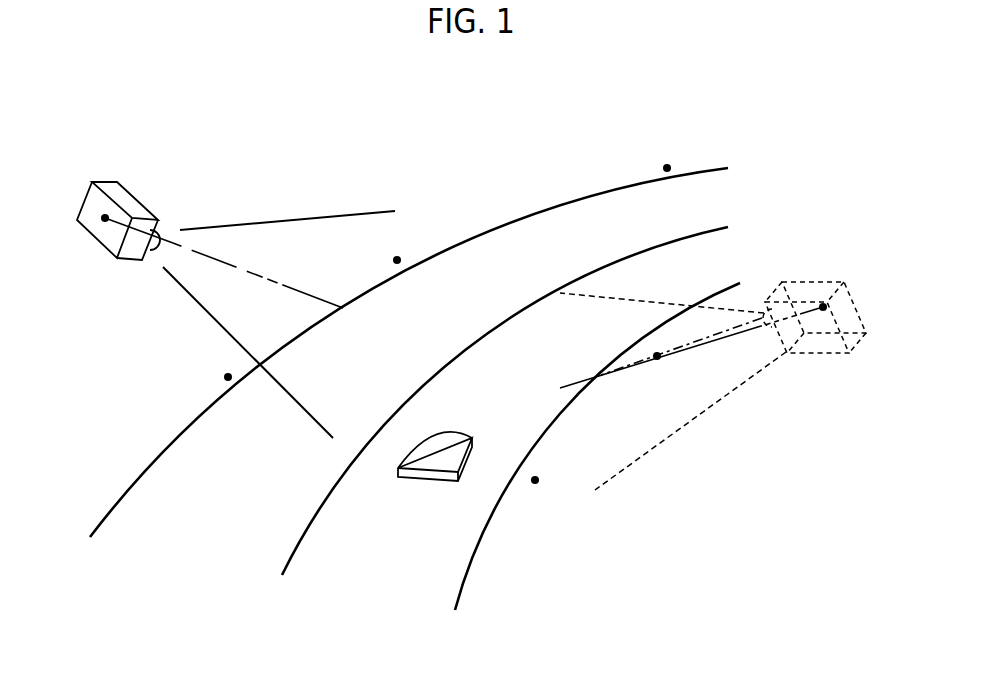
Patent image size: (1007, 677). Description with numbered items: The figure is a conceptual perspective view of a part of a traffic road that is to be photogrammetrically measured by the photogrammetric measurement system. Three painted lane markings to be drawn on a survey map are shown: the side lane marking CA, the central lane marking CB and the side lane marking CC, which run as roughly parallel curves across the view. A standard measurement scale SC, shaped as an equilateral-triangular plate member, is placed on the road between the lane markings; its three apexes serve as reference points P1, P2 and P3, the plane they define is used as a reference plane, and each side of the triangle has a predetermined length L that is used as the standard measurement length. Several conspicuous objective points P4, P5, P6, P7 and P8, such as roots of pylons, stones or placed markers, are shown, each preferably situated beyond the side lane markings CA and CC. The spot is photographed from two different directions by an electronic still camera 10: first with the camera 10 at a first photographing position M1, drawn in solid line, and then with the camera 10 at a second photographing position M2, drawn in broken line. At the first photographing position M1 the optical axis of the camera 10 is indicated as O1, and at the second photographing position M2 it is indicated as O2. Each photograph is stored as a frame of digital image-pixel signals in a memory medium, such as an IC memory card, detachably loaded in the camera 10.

The electronic still camera 10 is at (108, 237).
The first photographing position M1 is at (100, 216).
The second photographing position M2 is at (823, 303).
The optical axis O1 is at (238, 271).
The optical axis O2 is at (683, 352).
The reference point P1 is at (472, 438).
The reference point P2 is at (457, 481).
The reference point P3 is at (382, 468).
The objective point P4 is at (662, 168).
The objective point P5 is at (655, 352).
The objective point P6 is at (392, 260).
The objective point P7 is at (537, 485).
The objective point P8 is at (223, 376).
The standard measurement length L is at (438, 436).
The standard measurement scale SC is at (423, 466).
The side lane marking CA is at (125, 497).
The central lane marking CB is at (293, 543).
The side lane marking CC is at (462, 558).